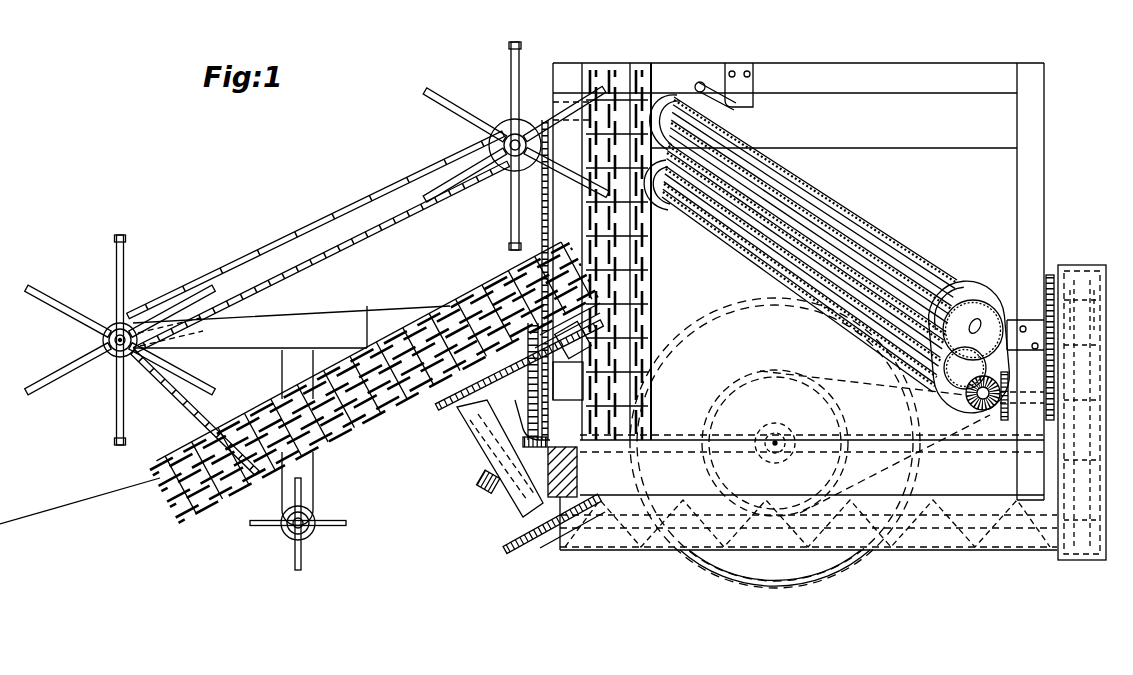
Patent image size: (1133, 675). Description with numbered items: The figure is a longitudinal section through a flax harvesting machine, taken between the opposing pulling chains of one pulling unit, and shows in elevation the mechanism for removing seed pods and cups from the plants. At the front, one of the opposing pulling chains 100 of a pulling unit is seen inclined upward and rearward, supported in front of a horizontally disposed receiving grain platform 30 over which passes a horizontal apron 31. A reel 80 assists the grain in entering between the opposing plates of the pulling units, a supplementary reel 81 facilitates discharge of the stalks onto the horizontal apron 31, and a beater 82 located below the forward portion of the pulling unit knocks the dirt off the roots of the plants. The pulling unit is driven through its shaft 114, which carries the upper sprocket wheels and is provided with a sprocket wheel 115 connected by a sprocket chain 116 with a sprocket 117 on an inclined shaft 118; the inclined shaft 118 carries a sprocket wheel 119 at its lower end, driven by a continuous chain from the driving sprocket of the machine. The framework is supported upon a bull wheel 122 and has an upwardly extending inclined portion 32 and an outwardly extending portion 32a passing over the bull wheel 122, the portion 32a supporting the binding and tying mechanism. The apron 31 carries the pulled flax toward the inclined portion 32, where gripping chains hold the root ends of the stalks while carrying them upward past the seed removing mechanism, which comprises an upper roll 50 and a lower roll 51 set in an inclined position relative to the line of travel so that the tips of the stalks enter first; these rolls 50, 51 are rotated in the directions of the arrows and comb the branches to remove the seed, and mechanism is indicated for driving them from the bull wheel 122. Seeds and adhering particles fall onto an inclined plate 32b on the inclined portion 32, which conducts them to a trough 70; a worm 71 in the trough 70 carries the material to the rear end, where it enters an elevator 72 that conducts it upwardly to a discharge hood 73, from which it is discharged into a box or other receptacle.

The receiving grain platform 30 is at (812, 467).
The horizontal apron 31 is at (665, 435).
The upwardly extending portion of the framework 32 is at (1017, 262).
The outwardly extending portion of the framework 32a is at (978, 287).
The inclined plate 32b is at (938, 170).
The upper roll 50 is at (923, 253).
The lower roll 51 is at (887, 358).
The trough 70 is at (988, 540).
The worm 71 is at (928, 550).
The elevator 72 is at (1093, 449).
The discharge hood 73 is at (1092, 320).
The reel 80 is at (65, 306).
The supplementary reel 81 is at (453, 102).
The beater 82 is at (312, 510).
The pulling chain 100 is at (357, 423).
The shaft 114 is at (565, 320).
The sprocket wheel 115 is at (558, 335).
The sprocket chain 116 is at (523, 378).
The sprocket 117 is at (440, 403).
The inclined shaft 118 is at (483, 428).
The sprocket wheel 119 is at (510, 540).
The bull wheel 122 is at (688, 560).